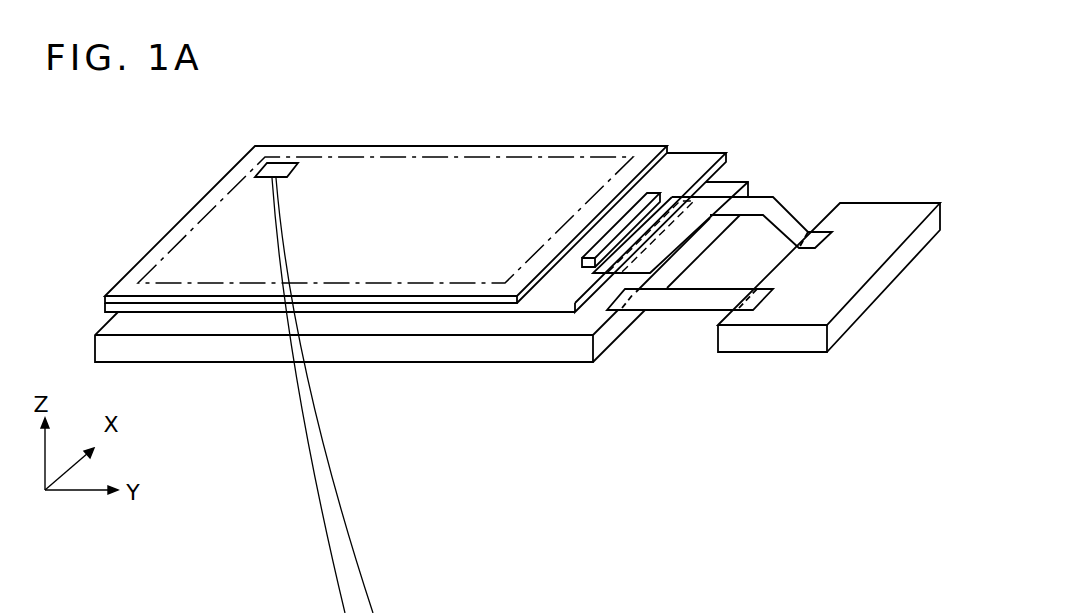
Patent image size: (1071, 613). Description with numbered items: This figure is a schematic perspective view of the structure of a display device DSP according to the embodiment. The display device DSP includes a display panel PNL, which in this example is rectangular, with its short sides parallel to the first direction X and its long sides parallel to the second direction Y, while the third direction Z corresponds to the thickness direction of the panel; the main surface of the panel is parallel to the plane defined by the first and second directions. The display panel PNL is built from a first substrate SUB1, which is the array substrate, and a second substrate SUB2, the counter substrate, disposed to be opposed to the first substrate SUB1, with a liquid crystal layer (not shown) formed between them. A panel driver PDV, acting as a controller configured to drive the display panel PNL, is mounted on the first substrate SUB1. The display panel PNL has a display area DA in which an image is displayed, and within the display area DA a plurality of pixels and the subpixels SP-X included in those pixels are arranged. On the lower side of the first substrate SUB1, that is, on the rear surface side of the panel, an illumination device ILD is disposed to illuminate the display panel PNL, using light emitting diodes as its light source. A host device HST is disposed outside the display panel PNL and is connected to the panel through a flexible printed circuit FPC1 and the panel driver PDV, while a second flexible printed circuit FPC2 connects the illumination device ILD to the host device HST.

The display device DSP is at (583, 98).
The display panel PNL is at (104, 300).
The first substrate SUB1 is at (419, 316).
The second substrate SUB2 is at (510, 146).
The display area DA is at (393, 157).
The subpixel SP-X is at (273, 165).
The illumination device ILD is at (507, 367).
The panel driver PDV is at (660, 192).
The flexible printed circuit FPC1 is at (773, 194).
The flexible printed circuit FPC2 is at (680, 313).
The host device HST is at (878, 203).